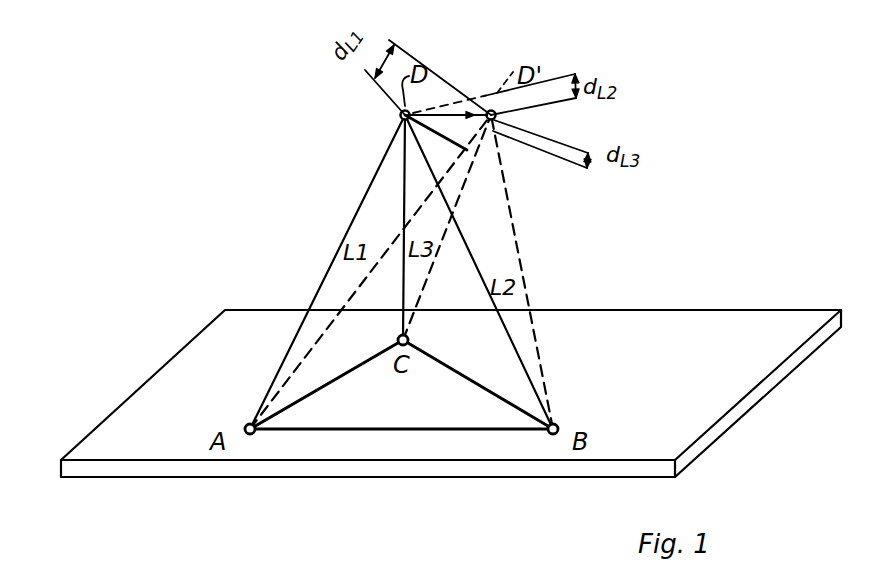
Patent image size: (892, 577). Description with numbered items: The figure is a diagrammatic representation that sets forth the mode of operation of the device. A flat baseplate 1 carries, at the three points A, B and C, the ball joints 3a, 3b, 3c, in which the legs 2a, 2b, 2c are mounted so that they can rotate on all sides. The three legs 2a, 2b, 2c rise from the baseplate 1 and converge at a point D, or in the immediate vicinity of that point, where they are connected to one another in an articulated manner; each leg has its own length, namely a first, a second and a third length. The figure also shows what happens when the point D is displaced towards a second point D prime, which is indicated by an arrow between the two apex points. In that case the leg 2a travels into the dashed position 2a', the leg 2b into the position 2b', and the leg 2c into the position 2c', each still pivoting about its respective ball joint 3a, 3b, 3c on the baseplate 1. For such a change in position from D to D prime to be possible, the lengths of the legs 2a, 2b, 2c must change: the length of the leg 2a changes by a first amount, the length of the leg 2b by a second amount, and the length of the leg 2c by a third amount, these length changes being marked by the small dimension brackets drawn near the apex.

The baseplate 1 is at (283, 469).
The leg 2a is at (327, 272).
The position of leg 2a' is at (370, 272).
The leg 2b is at (479, 272).
The position of leg 2b' is at (532, 272).
The leg 2c is at (383, 227).
The position of leg 2c' is at (451, 227).
The ball joint 3a is at (246, 424).
The ball joint 3b is at (559, 424).
The ball joint 3c is at (409, 339).